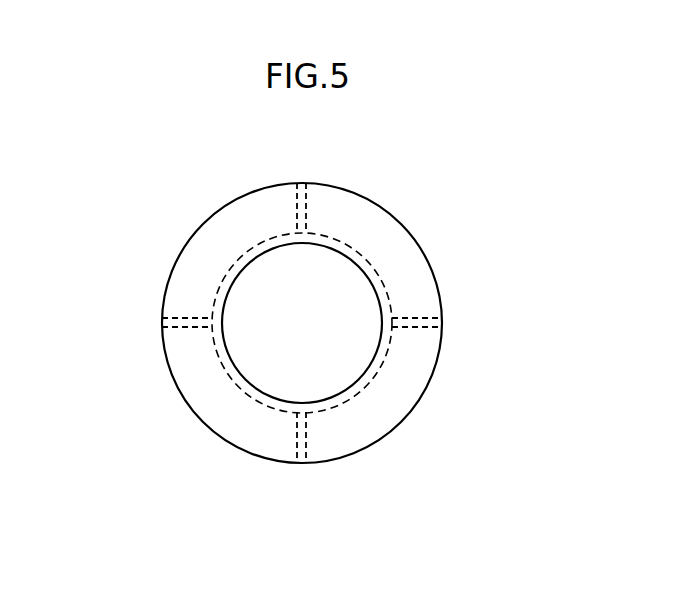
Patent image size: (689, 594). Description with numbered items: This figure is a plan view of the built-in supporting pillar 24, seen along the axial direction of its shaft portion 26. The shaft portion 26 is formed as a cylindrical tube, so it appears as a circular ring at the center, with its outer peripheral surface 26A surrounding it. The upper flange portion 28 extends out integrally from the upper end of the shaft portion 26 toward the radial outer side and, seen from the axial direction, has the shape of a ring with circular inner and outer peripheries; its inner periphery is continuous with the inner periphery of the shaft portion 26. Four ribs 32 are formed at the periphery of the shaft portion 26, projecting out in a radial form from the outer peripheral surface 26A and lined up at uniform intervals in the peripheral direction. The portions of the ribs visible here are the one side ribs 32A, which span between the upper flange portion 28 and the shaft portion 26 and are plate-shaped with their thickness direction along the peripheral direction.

The built-in supporting pillar 24 is at (305, 326).
The shaft portion 26 is at (347, 262).
The outer peripheral surface 26A is at (235, 388).
The upper flange portion 28 is at (398, 247).
The ribs 32 is at (305, 327).
The one side rib 32A is at (312, 208).